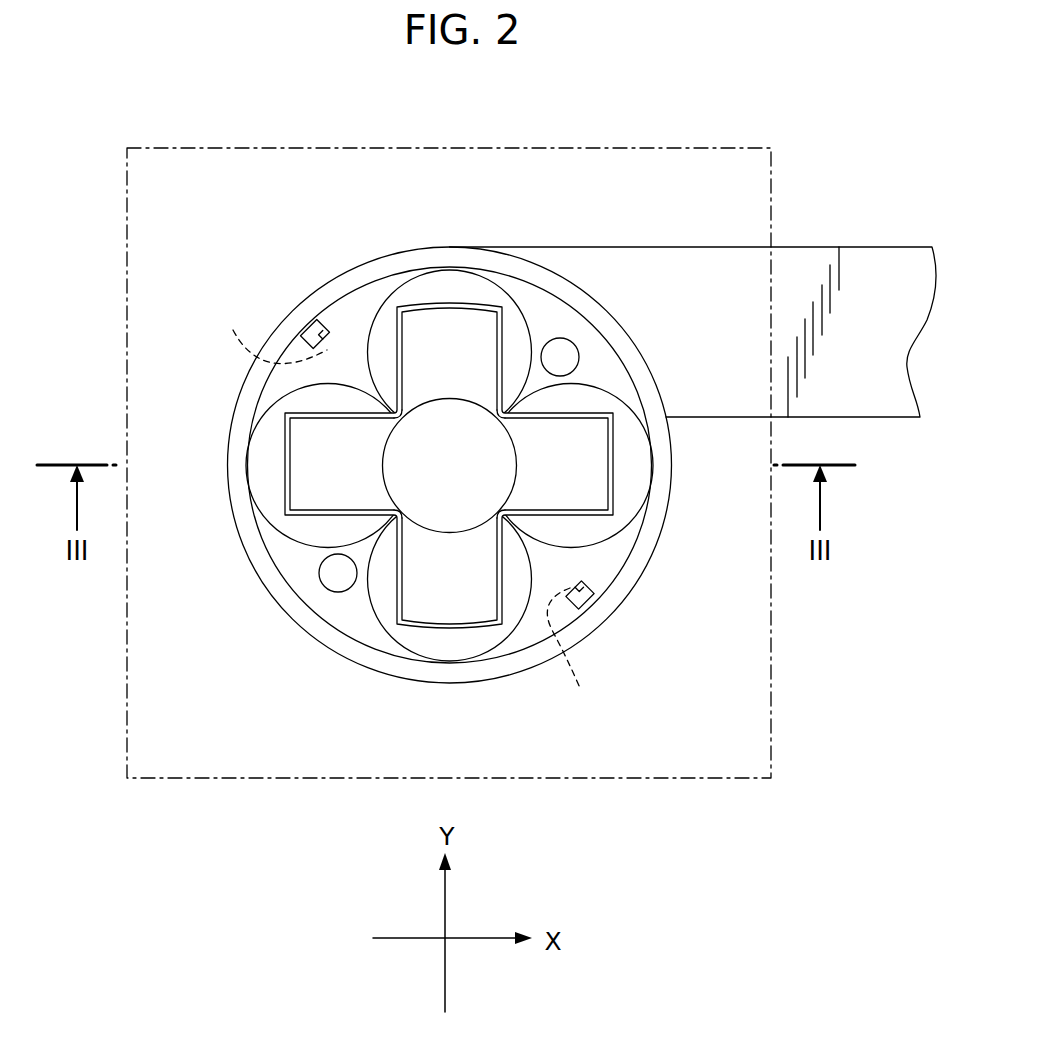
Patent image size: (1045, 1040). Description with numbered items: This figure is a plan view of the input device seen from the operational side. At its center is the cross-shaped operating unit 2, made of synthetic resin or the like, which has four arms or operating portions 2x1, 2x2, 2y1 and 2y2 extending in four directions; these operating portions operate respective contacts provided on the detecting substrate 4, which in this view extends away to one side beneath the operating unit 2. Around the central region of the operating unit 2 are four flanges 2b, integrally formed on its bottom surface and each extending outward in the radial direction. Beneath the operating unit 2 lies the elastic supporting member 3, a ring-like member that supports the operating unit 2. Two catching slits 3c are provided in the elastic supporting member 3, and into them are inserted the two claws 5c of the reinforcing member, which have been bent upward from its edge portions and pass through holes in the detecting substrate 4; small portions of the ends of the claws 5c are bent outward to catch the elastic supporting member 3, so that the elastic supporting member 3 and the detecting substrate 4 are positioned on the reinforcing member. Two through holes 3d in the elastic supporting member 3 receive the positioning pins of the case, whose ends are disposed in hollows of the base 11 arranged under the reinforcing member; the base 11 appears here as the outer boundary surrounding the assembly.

The operating unit 2 is at (618, 493).
The flanges 2b is at (537, 402).
The operating portion 2x1 is at (597, 443).
The operating portion 2x2 is at (298, 447).
The operating portion 2y1 is at (445, 333).
The operating portion 2y2 is at (440, 600).
The elastic supporting member 3 is at (284, 310).
The catching slits 3c is at (392, 512).
The through holes 3d is at (560, 355).
The detecting substrate 4 is at (862, 243).
The claws 5c is at (331, 318).
The base 11 is at (775, 656).